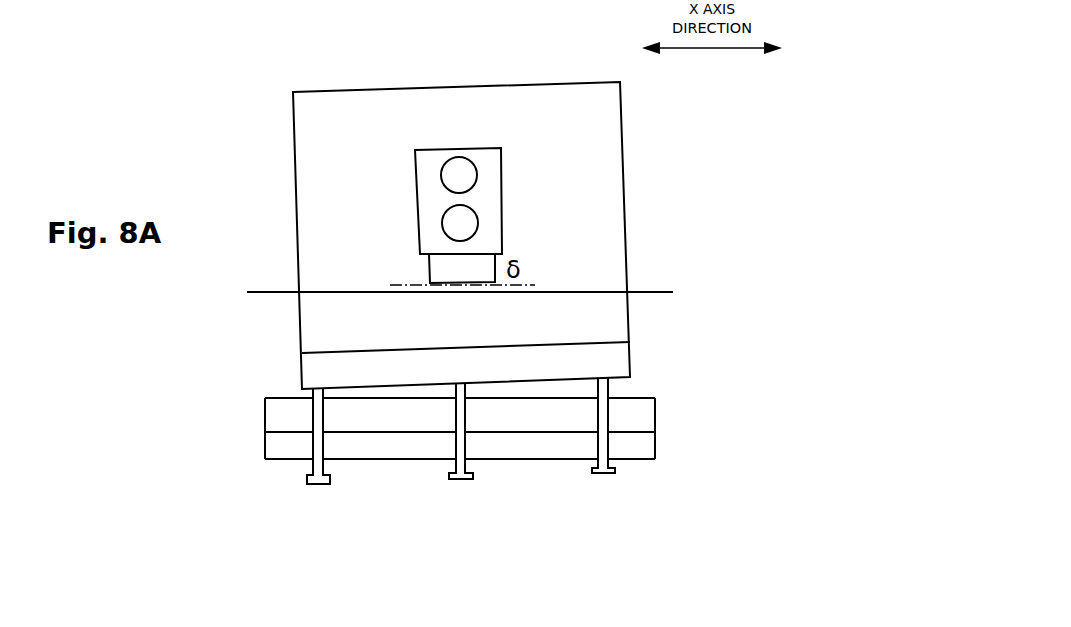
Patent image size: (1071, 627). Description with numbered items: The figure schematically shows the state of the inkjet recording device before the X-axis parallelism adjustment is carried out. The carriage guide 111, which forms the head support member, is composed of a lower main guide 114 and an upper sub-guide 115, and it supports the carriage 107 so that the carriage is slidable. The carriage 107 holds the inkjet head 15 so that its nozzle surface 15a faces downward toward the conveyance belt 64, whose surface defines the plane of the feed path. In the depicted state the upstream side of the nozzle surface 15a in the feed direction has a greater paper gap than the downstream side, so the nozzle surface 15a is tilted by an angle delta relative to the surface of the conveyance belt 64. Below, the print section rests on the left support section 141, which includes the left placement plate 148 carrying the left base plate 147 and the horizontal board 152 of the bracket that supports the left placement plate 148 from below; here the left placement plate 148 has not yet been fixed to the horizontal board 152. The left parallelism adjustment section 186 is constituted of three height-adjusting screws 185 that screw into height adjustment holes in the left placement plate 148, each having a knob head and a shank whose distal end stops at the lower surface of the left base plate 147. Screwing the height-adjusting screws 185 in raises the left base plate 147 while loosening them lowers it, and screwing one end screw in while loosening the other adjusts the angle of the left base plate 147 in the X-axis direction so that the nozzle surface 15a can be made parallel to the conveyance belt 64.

The carriage guide 111 is at (547, 127).
The sub-guide 115 is at (453, 170).
The main guide 114 is at (465, 223).
The carriage 107 is at (495, 223).
The inkjet head 15 is at (485, 262).
The nozzle surface 15a is at (480, 283).
The conveyance belt 64 is at (265, 293).
The left base plate 147 is at (612, 353).
The left placement plate 148 is at (642, 415).
The horizontal board 152 is at (642, 445).
The left support section 141 is at (556, 429).
The height-adjusting screws 185 is at (319, 484).
The left parallelism adjustment section 186 is at (471, 495).